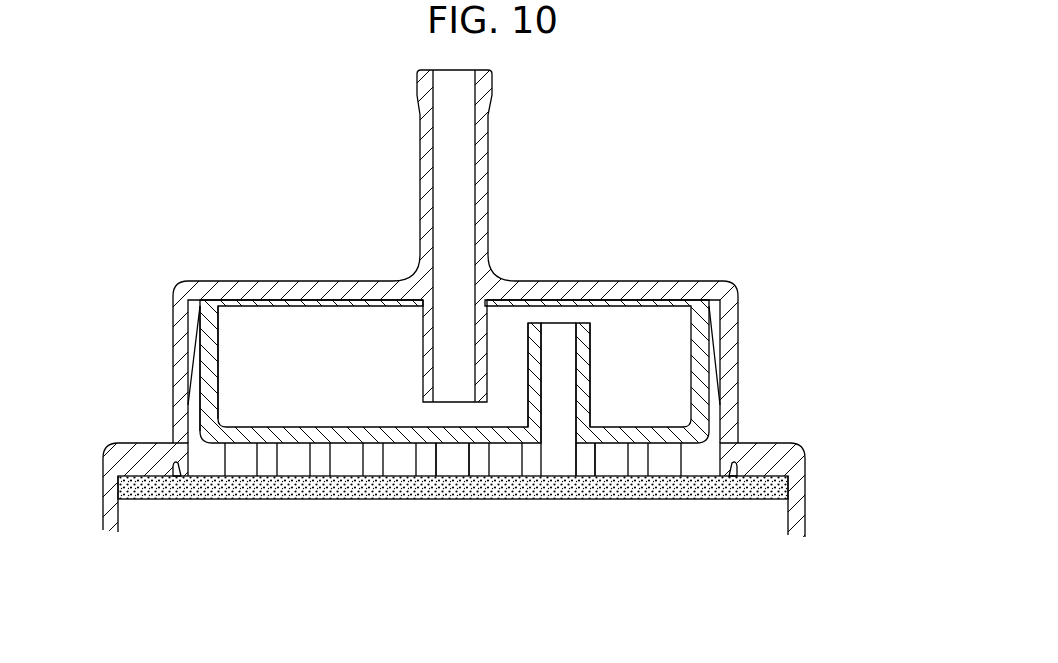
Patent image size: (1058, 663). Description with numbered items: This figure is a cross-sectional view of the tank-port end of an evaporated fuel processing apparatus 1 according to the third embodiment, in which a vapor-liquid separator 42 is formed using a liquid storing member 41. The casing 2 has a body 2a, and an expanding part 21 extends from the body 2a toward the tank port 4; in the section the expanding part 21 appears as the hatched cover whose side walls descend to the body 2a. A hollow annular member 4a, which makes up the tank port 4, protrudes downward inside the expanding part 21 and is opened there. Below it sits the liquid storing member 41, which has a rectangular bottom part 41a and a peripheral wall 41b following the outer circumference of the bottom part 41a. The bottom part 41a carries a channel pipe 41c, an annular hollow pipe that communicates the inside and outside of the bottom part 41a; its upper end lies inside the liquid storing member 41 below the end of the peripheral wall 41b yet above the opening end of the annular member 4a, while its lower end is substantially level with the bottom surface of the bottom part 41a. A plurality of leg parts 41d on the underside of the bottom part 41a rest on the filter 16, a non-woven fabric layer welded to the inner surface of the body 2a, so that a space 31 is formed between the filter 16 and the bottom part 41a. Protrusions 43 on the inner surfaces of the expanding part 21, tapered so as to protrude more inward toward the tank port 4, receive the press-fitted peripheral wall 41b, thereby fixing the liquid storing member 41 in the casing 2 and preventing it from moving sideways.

The evaporated fuel processing apparatus 1 is at (507, 512).
The casing 2 is at (489, 256).
The body 2a is at (804, 505).
The tank port 4 is at (457, 236).
The hollow annular member 4a is at (432, 362).
The filter 16 is at (229, 490).
The expanding part 21 is at (738, 385).
The space 31 is at (583, 458).
The liquid storing member 41 is at (441, 406).
The bottom part 41a is at (452, 447).
The peripheral wall 41b is at (202, 385).
The channel pipe 41c is at (582, 363).
The leg parts 41d is at (337, 453).
The vapor-liquid separator 42 is at (617, 265).
The protrusions 43 is at (195, 333).